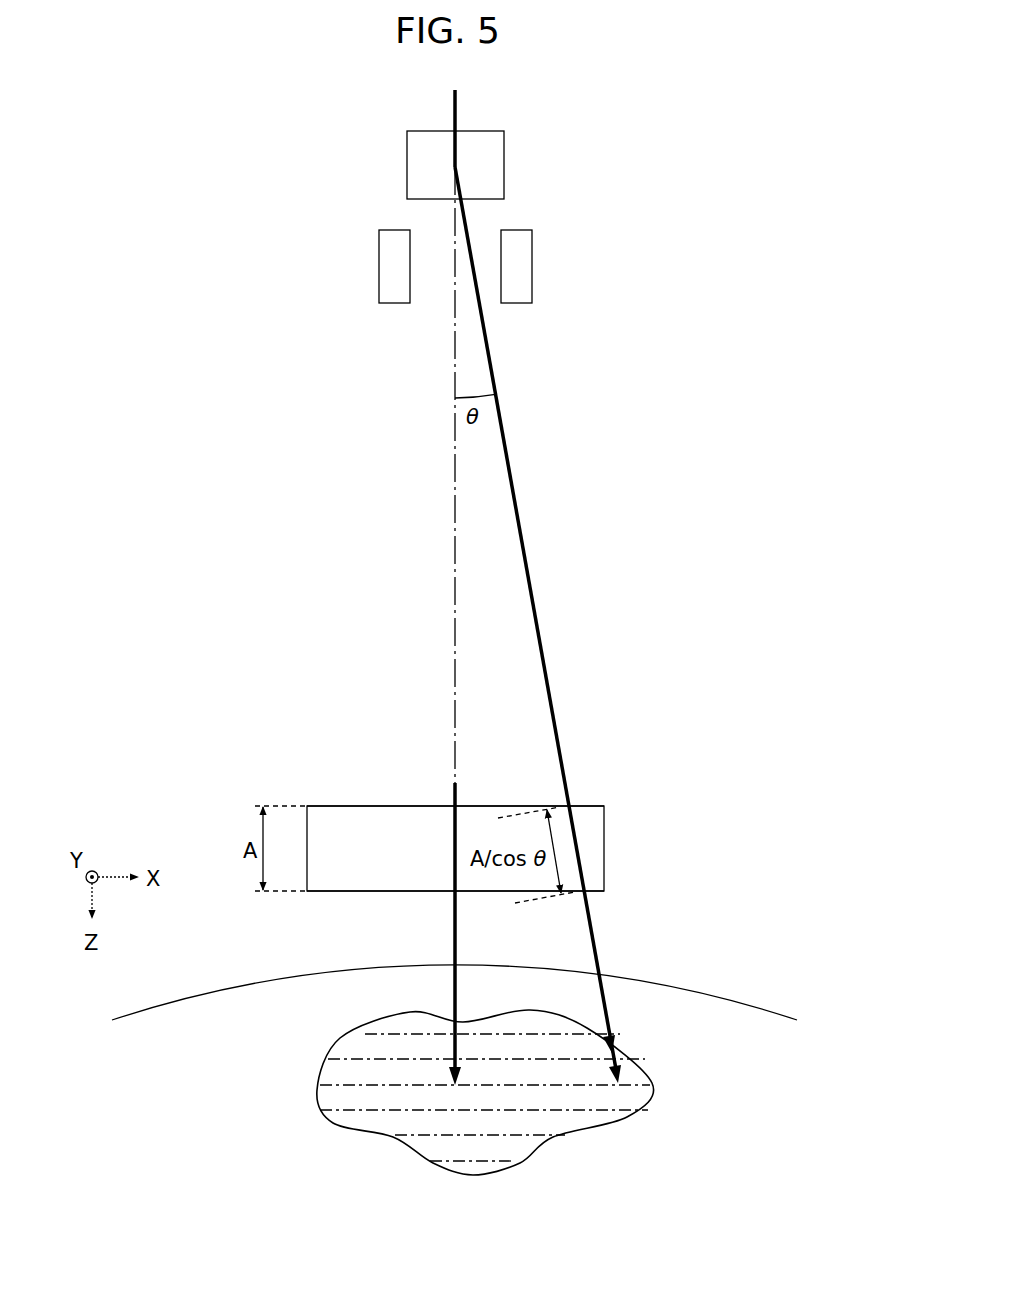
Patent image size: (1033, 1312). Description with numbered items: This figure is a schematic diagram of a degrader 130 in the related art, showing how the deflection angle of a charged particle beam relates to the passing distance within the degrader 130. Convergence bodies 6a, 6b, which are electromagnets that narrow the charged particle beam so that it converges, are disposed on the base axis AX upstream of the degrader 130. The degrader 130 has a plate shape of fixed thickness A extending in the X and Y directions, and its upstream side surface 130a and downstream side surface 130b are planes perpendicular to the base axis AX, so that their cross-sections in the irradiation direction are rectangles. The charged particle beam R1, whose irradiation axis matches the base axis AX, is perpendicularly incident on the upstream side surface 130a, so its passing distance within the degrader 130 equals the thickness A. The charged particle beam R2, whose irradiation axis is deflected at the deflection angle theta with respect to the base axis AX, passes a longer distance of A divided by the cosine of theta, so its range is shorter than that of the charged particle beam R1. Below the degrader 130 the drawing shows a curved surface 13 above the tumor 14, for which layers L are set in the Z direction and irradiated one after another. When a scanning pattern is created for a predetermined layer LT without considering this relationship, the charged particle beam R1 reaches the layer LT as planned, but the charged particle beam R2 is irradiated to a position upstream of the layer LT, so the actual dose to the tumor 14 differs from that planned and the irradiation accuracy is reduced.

The convergence body 6a is at (402, 150).
The convergence body 6b is at (374, 255).
The degrader 130 is at (604, 826).
The upstream side surface 130a is at (340, 806).
The downstream side surface 130b is at (336, 891).
The base axis AX is at (455, 542).
The charged particle beam R1 is at (455, 920).
The charged particle beam R2 is at (596, 937).
The skin surface 13 is at (752, 1005).
The tumor 14 is at (650, 1100).
The layer L is at (350, 1040).
The layer LT is at (340, 1085).